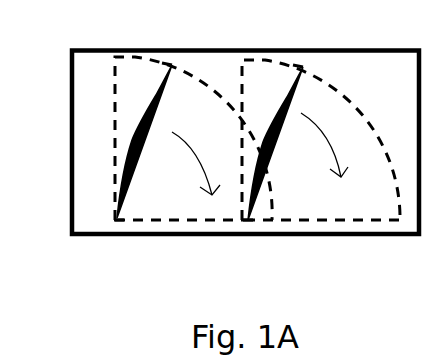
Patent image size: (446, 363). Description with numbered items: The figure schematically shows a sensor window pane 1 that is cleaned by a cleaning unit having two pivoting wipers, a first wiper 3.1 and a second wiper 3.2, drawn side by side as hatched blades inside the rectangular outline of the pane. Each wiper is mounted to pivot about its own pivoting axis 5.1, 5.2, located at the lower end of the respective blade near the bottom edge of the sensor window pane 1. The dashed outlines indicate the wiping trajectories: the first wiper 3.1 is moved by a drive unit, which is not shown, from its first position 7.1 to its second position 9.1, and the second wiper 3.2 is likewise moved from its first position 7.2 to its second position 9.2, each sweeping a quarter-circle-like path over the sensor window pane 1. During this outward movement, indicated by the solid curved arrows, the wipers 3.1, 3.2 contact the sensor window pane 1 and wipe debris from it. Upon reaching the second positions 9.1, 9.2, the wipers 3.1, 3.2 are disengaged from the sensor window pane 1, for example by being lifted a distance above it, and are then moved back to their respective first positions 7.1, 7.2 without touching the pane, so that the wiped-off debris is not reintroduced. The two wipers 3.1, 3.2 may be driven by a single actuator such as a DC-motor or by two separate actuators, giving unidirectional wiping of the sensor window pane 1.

The sensor window pane 1 is at (75, 48).
The first wiper 3.1 is at (152, 100).
The second wiper 3.2 is at (281, 101).
The pivoting axis of first wiper 5.1 is at (120, 222).
The pivoting axis of second wiper 5.2 is at (248, 222).
The first position of first wiper 7.1 is at (115, 130).
The first position of second wiper 7.2 is at (242, 80).
The second position of first wiper 9.1 is at (185, 221).
The second position of second wiper 9.2 is at (363, 221).